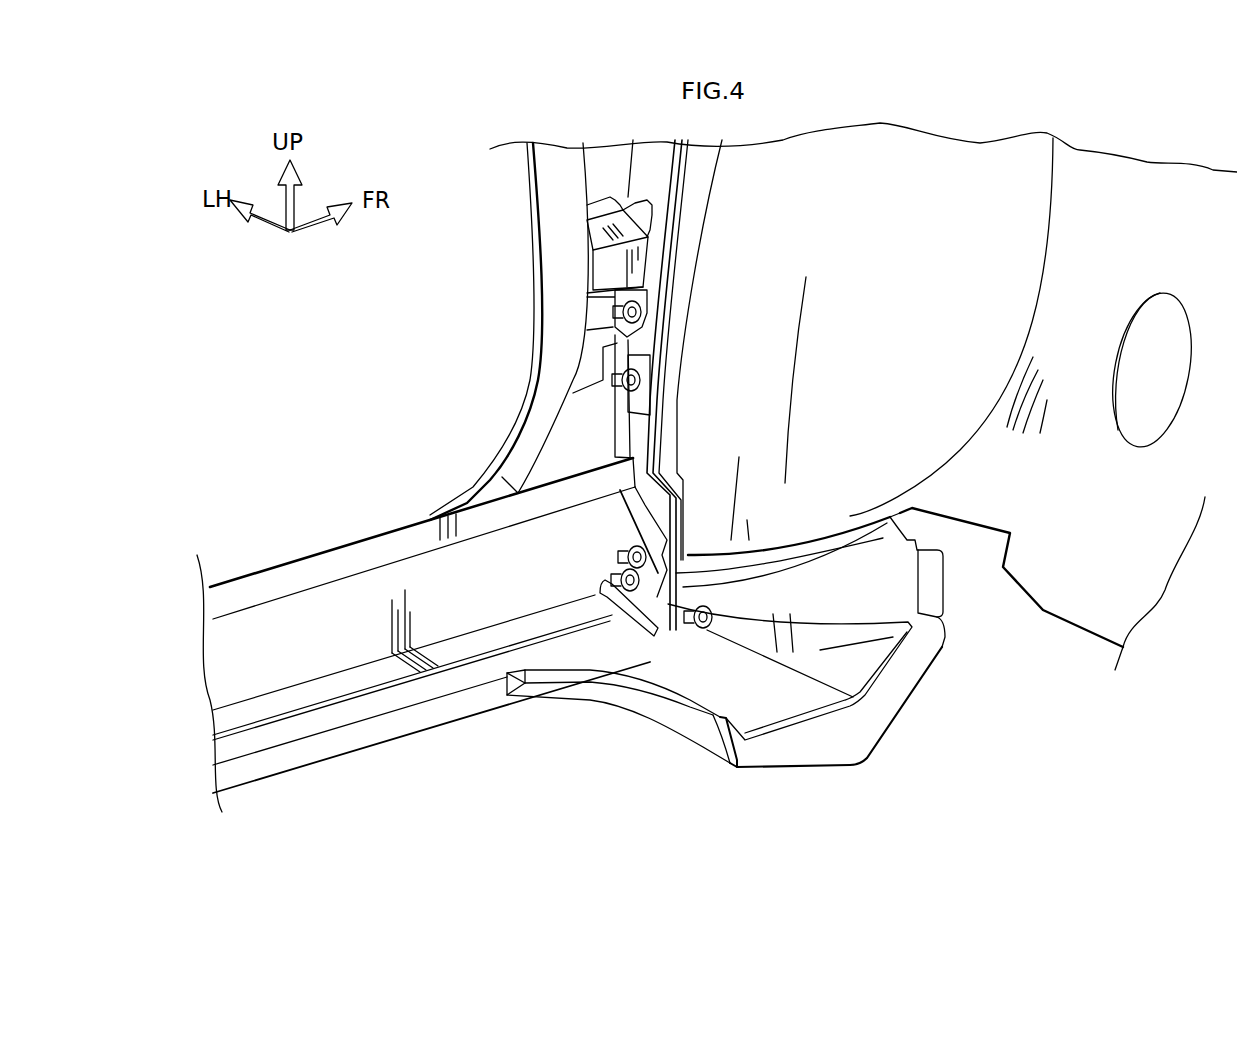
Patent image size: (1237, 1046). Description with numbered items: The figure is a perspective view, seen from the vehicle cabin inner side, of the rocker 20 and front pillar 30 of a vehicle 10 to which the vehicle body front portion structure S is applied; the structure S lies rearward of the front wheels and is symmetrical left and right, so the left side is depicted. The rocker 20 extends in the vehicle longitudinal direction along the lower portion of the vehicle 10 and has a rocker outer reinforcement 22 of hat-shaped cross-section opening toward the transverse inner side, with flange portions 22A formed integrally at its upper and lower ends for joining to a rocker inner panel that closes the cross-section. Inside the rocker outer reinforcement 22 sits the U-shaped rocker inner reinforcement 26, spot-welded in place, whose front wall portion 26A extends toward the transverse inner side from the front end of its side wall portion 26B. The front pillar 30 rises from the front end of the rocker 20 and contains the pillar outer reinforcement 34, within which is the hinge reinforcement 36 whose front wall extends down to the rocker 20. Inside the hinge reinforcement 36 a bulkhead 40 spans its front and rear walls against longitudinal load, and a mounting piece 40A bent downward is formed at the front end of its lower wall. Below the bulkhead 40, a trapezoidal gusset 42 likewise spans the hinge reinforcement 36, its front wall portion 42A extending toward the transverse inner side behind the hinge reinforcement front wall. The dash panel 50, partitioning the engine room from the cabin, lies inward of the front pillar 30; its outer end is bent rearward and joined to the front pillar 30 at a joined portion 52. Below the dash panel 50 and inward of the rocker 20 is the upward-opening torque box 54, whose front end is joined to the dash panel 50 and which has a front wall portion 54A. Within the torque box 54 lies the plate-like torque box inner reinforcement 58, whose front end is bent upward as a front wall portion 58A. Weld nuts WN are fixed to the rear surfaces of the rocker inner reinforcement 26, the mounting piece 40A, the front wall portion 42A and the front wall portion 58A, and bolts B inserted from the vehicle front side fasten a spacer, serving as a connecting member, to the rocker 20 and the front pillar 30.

The vehicle 10 is at (372, 330).
The rocker 20 is at (248, 786).
The rocker outer reinforcement 22 is at (320, 765).
The flange portion 22A is at (322, 563).
The rocker inner reinforcement 26 is at (470, 660).
The front wall portion 26A is at (613, 530).
The side wall portion 26B is at (357, 637).
The front pillar 30 is at (523, 157).
The front pillar outer reinforcement 34 is at (555, 187).
The hinge reinforcement 36 is at (612, 172).
The bulkhead 40 is at (600, 268).
The mounting piece 40A is at (623, 327).
The gusset 42 is at (580, 437).
The front wall portion 42A is at (623, 360).
The dash panel 50 is at (923, 153).
The joined portion 52 is at (700, 178).
The torque box 54 is at (820, 762).
The front wall portion 54A is at (900, 573).
The torque box inner reinforcement 58 is at (779, 748).
The front wall portion 58A is at (863, 632).
The bolt B is at (647, 313).
The weld nut WN is at (643, 300).
The vehicle body front portion structure S is at (573, 768).